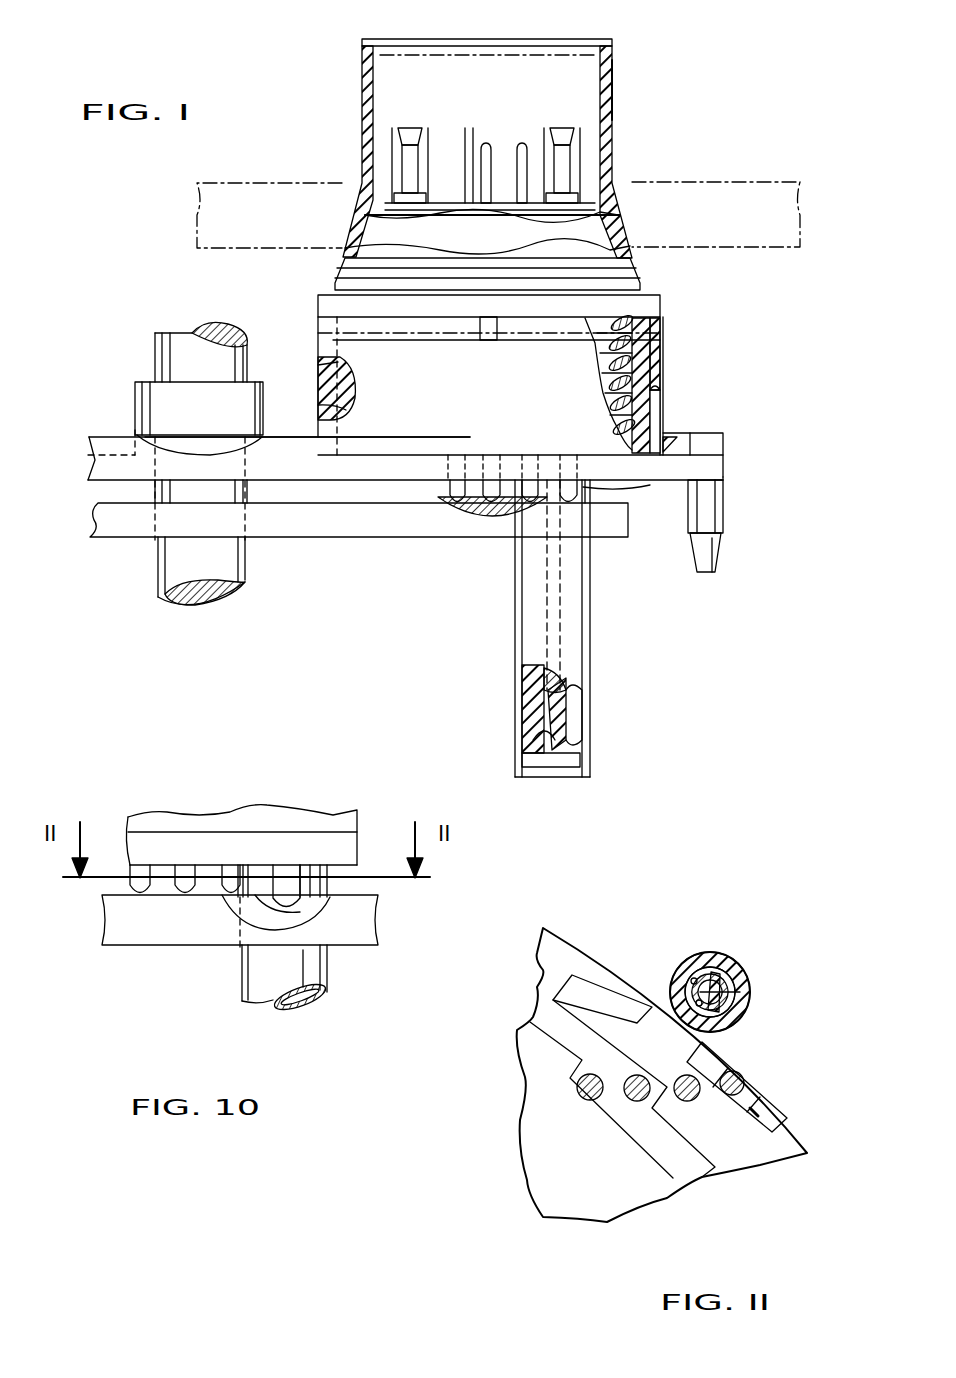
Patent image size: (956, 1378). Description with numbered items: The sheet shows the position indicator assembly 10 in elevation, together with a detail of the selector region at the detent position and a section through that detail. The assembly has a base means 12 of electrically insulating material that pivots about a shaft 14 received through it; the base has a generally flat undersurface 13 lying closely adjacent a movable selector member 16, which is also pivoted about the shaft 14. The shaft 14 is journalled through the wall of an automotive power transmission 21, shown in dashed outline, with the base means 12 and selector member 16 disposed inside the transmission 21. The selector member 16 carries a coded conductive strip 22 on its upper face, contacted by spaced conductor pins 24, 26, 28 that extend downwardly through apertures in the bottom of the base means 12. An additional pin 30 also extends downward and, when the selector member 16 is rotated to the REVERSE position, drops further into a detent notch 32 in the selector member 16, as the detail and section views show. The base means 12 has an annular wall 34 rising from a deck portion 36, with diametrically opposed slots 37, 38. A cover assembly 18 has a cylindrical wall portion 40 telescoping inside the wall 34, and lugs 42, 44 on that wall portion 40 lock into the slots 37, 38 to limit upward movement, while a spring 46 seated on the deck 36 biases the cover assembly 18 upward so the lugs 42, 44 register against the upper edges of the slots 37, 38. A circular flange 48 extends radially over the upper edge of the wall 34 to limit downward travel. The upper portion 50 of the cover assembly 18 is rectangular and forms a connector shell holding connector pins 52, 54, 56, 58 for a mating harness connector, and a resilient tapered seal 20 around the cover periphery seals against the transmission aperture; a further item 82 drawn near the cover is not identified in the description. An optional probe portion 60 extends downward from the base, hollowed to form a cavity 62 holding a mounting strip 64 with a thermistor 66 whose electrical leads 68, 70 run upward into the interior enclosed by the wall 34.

In FIG. 1, the position indicator assembly 10 is at (735, 510).
In FIG. 1, the base means 12 is at (715, 413).
In FIG. 10, the base means 12 is at (318, 806).
In FIG. 1, the flat undersurface 13 is at (335, 482).
In FIG. 1, the shaft 14 is at (155, 362).
In FIG. 1, the selector member 16 is at (270, 540).
In FIG. 10, the selector member 16 is at (116, 947).
In FIG. 11, the selector member 16 is at (797, 1145).
In FIG. 1, the cover assembly 18 is at (616, 160).
In FIG. 1, the seal 20 is at (650, 262).
In FIG. 1, the automotive power transmission 21 is at (230, 256).
In FIG. 1, the coded conductive strip 22 is at (476, 455).
In FIG. 11, the coded conductive strip 22 is at (560, 1005).
In FIG. 1, the conductor pin 24 is at (445, 503).
In FIG. 10, the conductor pin 24 is at (148, 865).
In FIG. 11, the conductor pin 24 is at (572, 1077).
In FIG. 1, the conductor pin 26 is at (520, 505).
In FIG. 10, the conductor pin 26 is at (205, 865).
In FIG. 11, the conductor pin 26 is at (630, 1100).
In FIG. 1, the conductor pin 28 is at (585, 540).
In FIG. 10, the conductor pin 28 is at (258, 865).
In FIG. 11, the conductor pin 28 is at (689, 1102).
In FIG. 1, the pin 30 is at (590, 487).
In FIG. 10, the pin 30 is at (327, 900).
In FIG. 11, the pin 30 is at (738, 1072).
In FIG. 10, the detent notch 32 is at (270, 900).
In FIG. 11, the detent notch 32 is at (765, 1108).
In FIG. 1, the annular wall 34 is at (660, 330).
In FIG. 1, the deck portion 36 is at (530, 455).
In FIG. 1, the slot 37 is at (318, 378).
In FIG. 1, the slot 38 is at (660, 392).
In FIG. 1, the cylindrical wall portion 40 is at (335, 406).
In FIG. 1, the lug 42 is at (335, 383).
In FIG. 1, the lug 44 is at (658, 395).
In FIG. 1, the spring 46 is at (590, 338).
In FIG. 1, the circular flange 48 is at (318, 308).
In FIG. 1, the upper portion 50 is at (618, 112).
In FIG. 1, the connector pin 52 is at (428, 138).
In FIG. 1, the connector pin 54 is at (490, 140).
In FIG. 1, the connector pin 56 is at (528, 140).
In FIG. 1, the connector pin 58 is at (555, 138).
In FIG. 1, the probe portion 60 is at (590, 647).
In FIG. 10, the probe portion 60 is at (243, 997).
In FIG. 11, the probe portion 60 is at (730, 958).
In FIG. 1, the cavity 62 is at (540, 735).
In FIG. 1, the mounting strip 64 is at (565, 766).
In FIG. 11, the mounting strip 64 is at (740, 990).
In FIG. 1, the thermistor 66 is at (545, 705).
In FIG. 11, the thermistor 66 is at (700, 985).
In FIG. 1, the electrical lead 68 is at (528, 684).
In FIG. 11, the electrical lead 68 is at (692, 972).
In FIG. 1, the electrical lead 70 is at (580, 690).
In FIG. 11, the electrical lead 70 is at (685, 990).
In FIG. 1, the wire bundle 82 is at (536, 224).